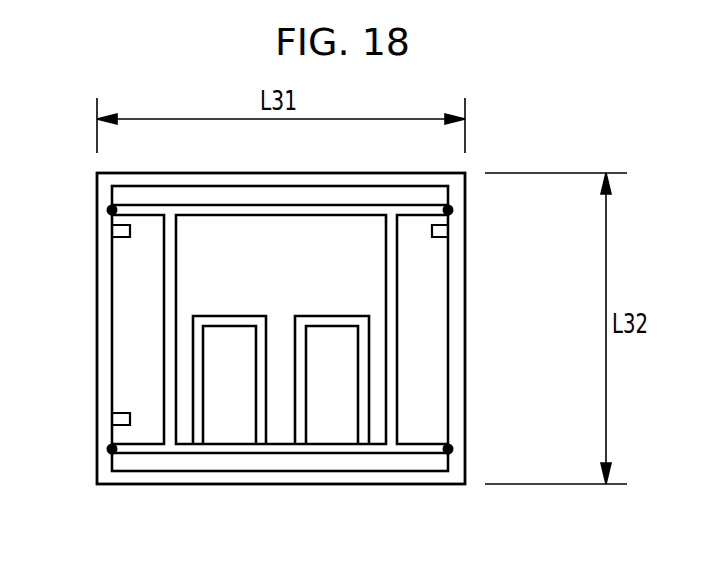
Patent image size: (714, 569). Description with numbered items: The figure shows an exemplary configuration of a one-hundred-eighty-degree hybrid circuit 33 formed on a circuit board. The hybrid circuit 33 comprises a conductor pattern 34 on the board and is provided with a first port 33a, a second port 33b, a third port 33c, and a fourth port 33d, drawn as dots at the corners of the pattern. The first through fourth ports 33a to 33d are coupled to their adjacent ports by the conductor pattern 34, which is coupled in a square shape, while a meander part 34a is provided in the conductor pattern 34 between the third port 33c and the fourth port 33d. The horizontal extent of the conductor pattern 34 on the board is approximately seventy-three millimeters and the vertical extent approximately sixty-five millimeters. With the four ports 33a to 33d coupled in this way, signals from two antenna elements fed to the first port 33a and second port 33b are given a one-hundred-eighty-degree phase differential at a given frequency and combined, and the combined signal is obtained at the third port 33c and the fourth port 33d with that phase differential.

The 180° hybrid circuit 33 is at (293, 485).
The first port 33a is at (107, 210).
The second port 33b is at (453, 210).
The third port 33c is at (107, 449).
The fourth port 33d is at (453, 449).
The conductor pattern 34 is at (300, 217).
The meander part 34a is at (225, 316).